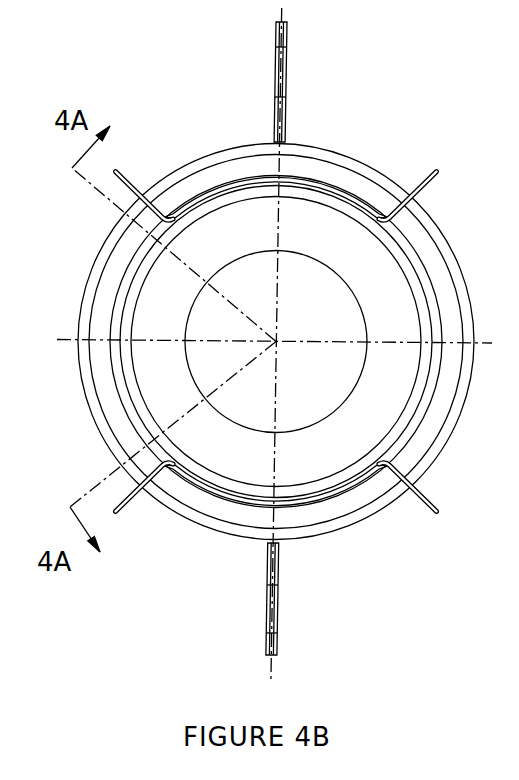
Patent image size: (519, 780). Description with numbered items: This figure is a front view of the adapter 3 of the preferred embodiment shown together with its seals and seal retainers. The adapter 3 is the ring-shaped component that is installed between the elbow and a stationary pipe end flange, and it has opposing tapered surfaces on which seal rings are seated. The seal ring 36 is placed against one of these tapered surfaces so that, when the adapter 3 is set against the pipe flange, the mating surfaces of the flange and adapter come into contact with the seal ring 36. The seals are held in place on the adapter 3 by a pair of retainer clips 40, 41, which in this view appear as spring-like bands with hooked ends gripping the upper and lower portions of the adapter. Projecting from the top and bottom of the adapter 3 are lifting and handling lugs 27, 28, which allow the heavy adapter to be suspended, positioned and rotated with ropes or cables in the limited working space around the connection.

The adapter 3 is at (240, 342).
The seal ring 36 is at (221, 342).
The lifting and handling lug 27 is at (287, 63).
The lifting and handling lug 28 is at (278, 607).
The retainer clip 40 is at (276, 155).
The retainer clip 41 is at (276, 527).